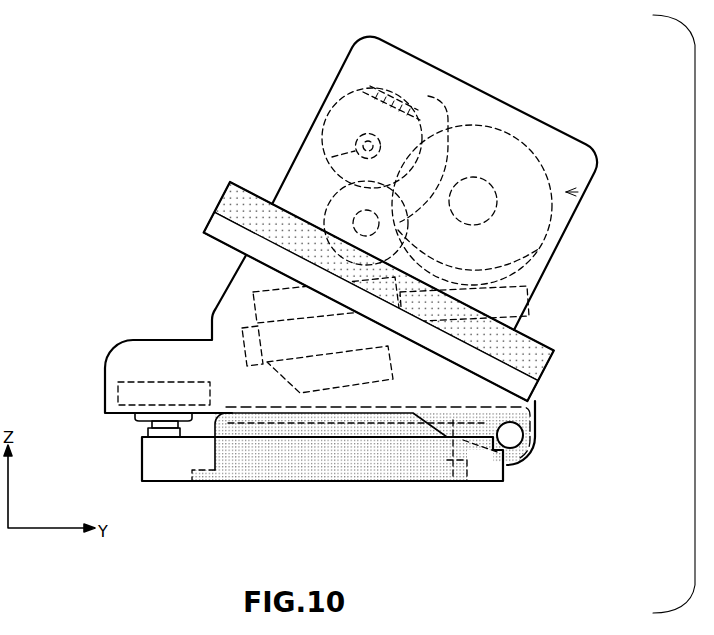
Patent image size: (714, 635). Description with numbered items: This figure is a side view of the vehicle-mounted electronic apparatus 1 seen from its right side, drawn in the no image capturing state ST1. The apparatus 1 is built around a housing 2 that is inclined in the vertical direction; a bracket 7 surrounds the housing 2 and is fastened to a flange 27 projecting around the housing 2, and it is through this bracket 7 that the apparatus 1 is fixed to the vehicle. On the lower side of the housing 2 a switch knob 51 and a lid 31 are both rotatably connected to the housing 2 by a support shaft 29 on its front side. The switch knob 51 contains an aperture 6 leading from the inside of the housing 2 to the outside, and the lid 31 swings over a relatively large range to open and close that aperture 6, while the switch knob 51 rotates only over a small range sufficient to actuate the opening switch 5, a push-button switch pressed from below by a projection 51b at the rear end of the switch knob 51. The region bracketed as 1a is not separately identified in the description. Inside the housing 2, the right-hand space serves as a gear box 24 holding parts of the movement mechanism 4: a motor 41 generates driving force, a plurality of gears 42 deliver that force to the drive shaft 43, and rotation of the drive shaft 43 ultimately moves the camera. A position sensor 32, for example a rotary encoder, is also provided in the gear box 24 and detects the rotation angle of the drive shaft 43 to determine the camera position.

The vehicle-mounted electronic apparatus 1 is at (597, 106).
The base portion 1a is at (318, 522).
The housing 2 is at (466, 83).
The movement mechanism 4 is at (576, 196).
The opening switch 5 is at (155, 388).
The aperture 6 is at (358, 487).
The bracket 7 is at (233, 192).
The gear box 24 is at (486, 112).
The flange 27 is at (223, 220).
The support shaft 29 is at (523, 444).
The lid 31 is at (318, 430).
The position sensor 32 is at (336, 75).
The motor 41 is at (407, 381).
The gears 42 is at (528, 291).
The drive shaft 43 is at (360, 176).
The switch knob 51 is at (162, 460).
The projection 51b is at (150, 430).
The no image capturing state ST1 is at (111, 108).